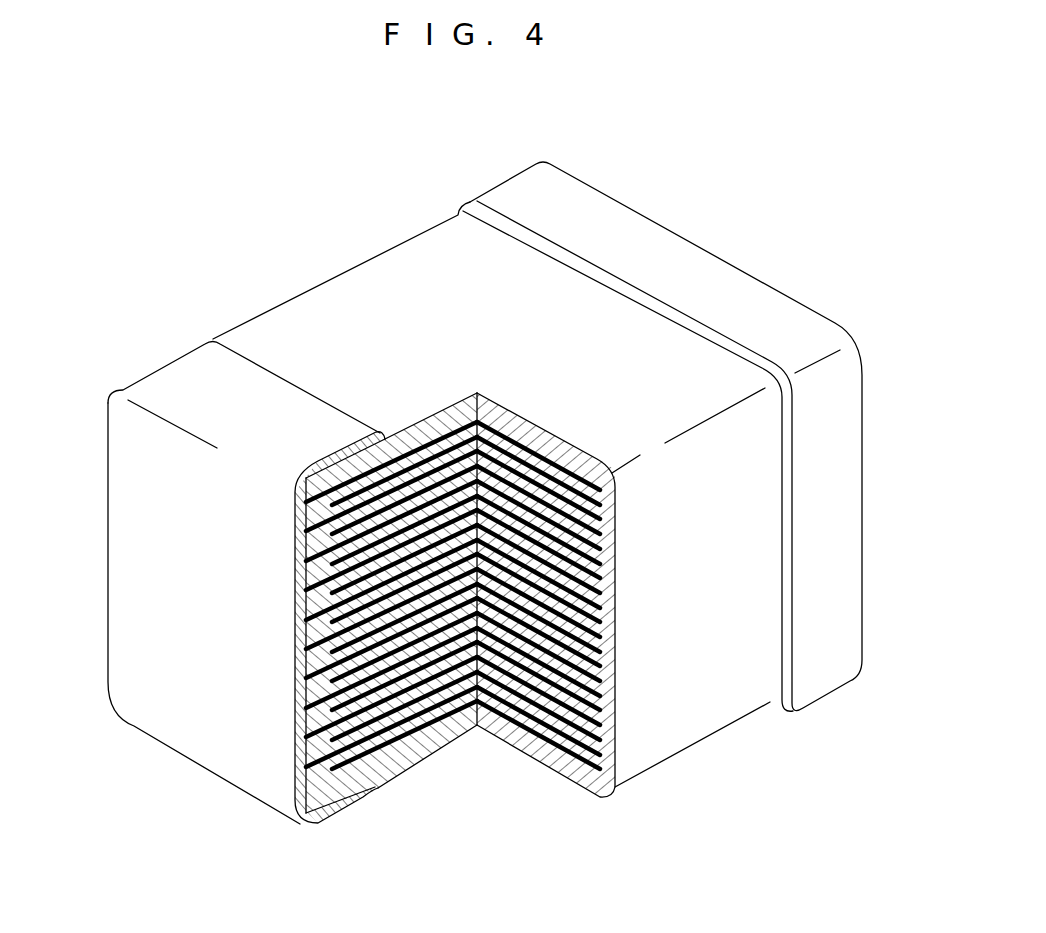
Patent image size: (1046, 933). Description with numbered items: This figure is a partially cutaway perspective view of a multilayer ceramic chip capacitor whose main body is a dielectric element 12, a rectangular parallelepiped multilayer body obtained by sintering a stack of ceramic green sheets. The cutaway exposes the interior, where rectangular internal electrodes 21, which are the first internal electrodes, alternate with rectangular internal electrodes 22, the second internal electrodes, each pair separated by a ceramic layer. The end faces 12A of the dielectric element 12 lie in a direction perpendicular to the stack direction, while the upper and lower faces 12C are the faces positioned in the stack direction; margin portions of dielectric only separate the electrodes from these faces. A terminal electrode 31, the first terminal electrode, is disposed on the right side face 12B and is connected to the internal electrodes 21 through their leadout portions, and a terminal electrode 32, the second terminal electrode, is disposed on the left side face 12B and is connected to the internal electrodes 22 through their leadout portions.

The dielectric element 12 is at (373, 293).
The end faces 12A is at (308, 296).
The side faces 12B is at (292, 722).
The upper and lower faces 12C is at (433, 277).
The internal electrode 21 is at (305, 680).
The internal electrode 22 is at (320, 590).
The terminal electrode 31 is at (676, 233).
The terminal electrode 32 is at (147, 521).